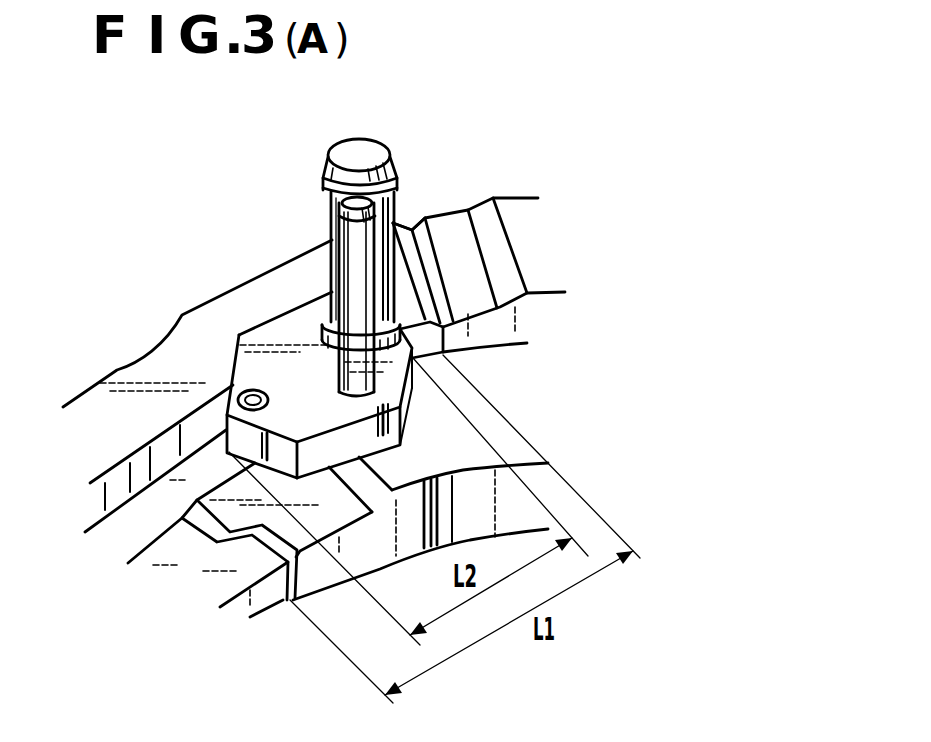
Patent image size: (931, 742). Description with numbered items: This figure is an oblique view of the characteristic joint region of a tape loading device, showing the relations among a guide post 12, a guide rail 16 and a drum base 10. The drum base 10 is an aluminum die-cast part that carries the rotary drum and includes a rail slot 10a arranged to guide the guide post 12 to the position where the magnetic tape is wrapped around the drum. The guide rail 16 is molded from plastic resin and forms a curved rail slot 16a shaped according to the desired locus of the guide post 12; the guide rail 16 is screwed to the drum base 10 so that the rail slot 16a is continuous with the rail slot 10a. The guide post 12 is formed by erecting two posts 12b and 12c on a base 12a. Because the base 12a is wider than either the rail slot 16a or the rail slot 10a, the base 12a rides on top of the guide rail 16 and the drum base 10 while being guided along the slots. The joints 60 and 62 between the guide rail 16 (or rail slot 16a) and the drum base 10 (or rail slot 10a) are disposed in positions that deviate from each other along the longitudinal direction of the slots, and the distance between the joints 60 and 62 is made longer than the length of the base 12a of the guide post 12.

The drum base 10 is at (518, 212).
The rail slot 10a is at (485, 368).
The guide post 12 is at (313, 130).
The base 12a is at (263, 345).
The post 12b is at (330, 168).
The post 12c is at (350, 245).
The guide rail 16 is at (148, 390).
The rail slot 16a is at (187, 480).
The joint 60 is at (283, 614).
The joint 62 is at (417, 222).